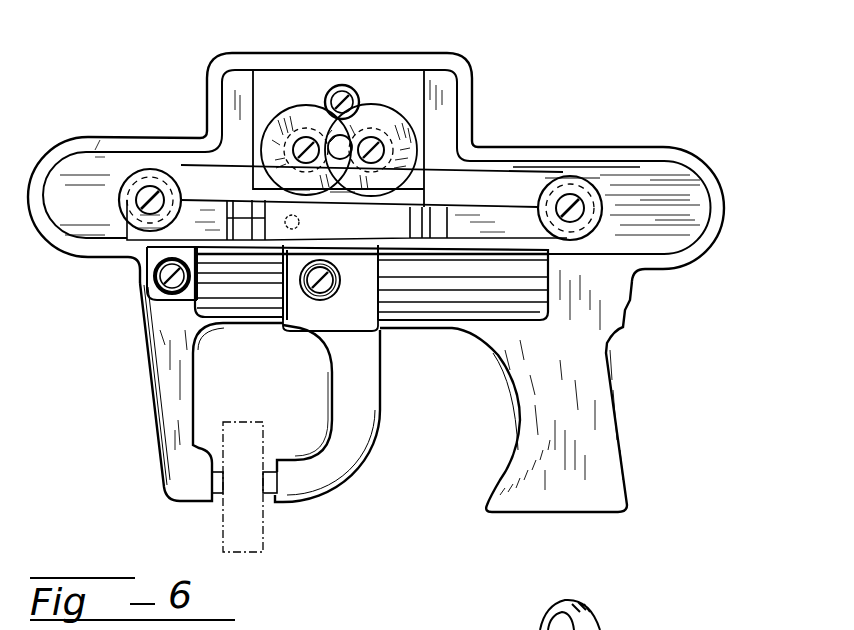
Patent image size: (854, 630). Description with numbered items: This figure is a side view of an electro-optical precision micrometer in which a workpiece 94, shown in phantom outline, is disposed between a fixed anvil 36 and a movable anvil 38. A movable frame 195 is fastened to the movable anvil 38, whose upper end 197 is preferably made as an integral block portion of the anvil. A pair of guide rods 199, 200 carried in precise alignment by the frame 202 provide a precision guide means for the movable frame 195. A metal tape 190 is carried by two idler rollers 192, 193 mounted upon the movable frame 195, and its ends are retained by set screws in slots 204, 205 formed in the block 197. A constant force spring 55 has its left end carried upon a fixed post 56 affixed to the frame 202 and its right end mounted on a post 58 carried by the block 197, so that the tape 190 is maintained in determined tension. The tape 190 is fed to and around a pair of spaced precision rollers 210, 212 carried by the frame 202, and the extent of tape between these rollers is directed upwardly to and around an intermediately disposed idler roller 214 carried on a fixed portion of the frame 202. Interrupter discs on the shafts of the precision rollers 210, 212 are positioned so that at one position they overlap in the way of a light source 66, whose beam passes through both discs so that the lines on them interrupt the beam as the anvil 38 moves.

The fixed anvil 36 is at (160, 410).
The movable anvil 38 is at (352, 457).
The constant force spring 55 is at (223, 255).
The fixed post 56 is at (157, 280).
The post 58 is at (318, 299).
The light source 66 is at (343, 138).
The workpiece 94 is at (258, 535).
The tape 190 is at (513, 168).
The idler roller 192 is at (522, 210).
The idler roller 193 is at (143, 170).
The movable frame 195 is at (570, 176).
The upper end (block) 197 is at (400, 215).
The guide rod 199 is at (542, 312).
The guide rod 200 is at (500, 263).
The frame 202 is at (722, 202).
The slot 204 is at (233, 207).
The slot 205 is at (437, 238).
The precision roller 210 is at (300, 110).
The precision roller 212 is at (390, 100).
The idler roller 214 is at (342, 85).